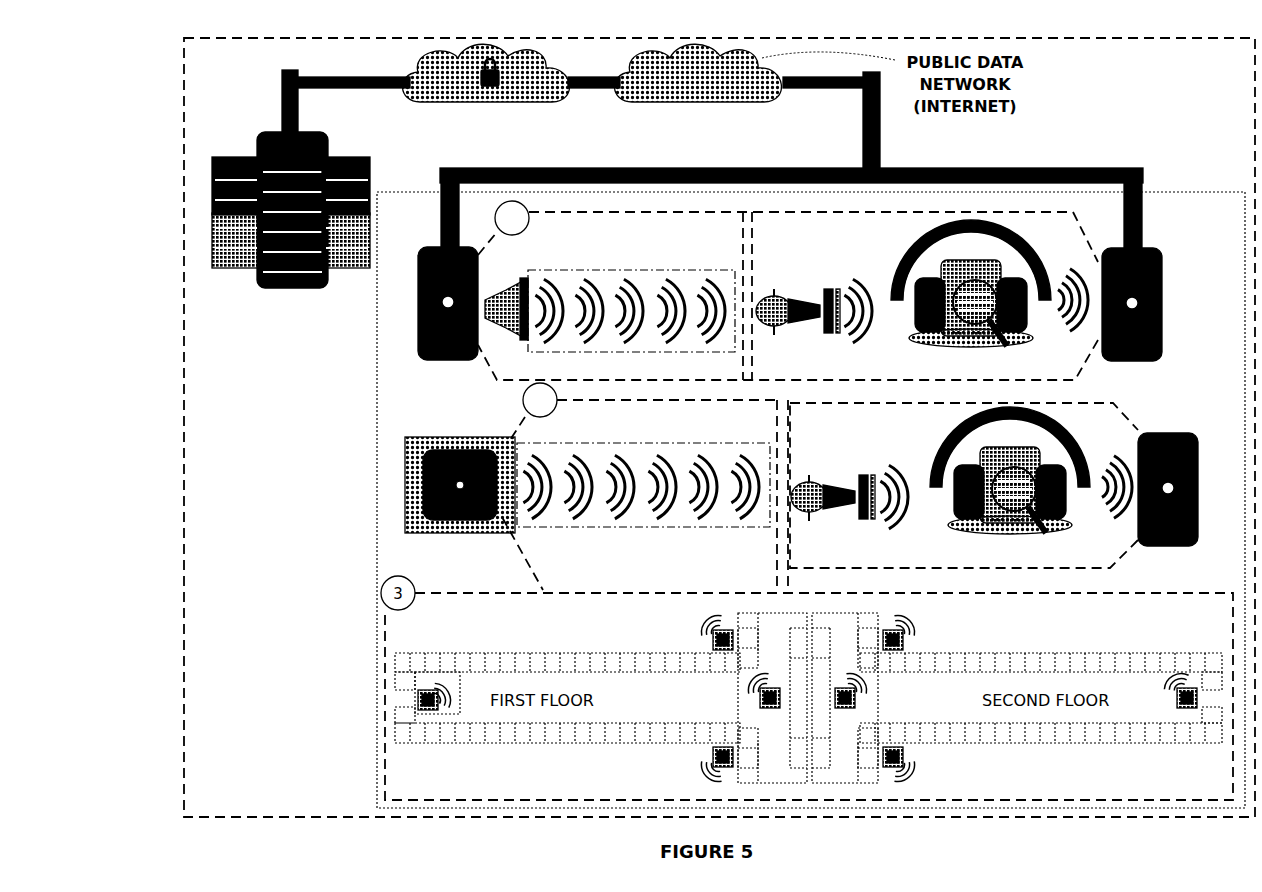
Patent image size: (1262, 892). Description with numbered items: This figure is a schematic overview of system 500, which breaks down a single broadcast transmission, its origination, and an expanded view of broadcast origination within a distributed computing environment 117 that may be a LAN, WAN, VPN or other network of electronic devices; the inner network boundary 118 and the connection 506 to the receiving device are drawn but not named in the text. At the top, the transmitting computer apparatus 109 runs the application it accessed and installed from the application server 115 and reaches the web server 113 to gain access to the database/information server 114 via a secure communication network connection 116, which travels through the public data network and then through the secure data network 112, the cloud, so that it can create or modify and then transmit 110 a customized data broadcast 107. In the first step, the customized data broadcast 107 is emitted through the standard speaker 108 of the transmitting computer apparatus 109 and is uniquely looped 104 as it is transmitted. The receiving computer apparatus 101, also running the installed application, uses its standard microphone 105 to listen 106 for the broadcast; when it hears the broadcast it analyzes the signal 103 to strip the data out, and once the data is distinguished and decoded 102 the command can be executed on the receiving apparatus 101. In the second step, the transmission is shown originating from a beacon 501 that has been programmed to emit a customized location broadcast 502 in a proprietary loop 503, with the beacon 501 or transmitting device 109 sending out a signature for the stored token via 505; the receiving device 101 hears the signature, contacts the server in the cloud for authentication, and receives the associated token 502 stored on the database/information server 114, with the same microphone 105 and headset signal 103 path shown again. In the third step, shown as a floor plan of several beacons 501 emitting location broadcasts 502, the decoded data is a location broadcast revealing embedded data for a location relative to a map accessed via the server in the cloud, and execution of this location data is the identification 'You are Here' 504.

The receiving computer apparatus 101 is at (1162, 320).
The decoding of the data 102 is at (1075, 286).
The signal 103 is at (968, 332).
The unique loop 104 is at (556, 270).
The standard microphone 105 is at (794, 288).
The listening 106 is at (1100, 352).
The customized data broadcast 107 is at (700, 342).
The standard speaker 108 is at (500, 298).
The transmitting computer apparatus 109 is at (418, 330).
The transmission 110 is at (497, 380).
The secure data network 112 is at (490, 104).
The web server 113 is at (245, 157).
The information server 114 is at (315, 132).
The application server 115 is at (365, 158).
The secure communication network connection 116 is at (863, 130).
The distributed computing environment 117 is at (190, 822).
The local network 118 is at (1172, 192).
The system 500 is at (1172, 842).
The beacon 501 is at (425, 452).
The customized location broadcast 502 is at (755, 522).
The proprietary loop 503 is at (636, 443).
The You are Here identification 504 is at (1100, 460).
The signature transmission 505 is at (510, 442).
The mobile device connection 506 is at (1136, 428).